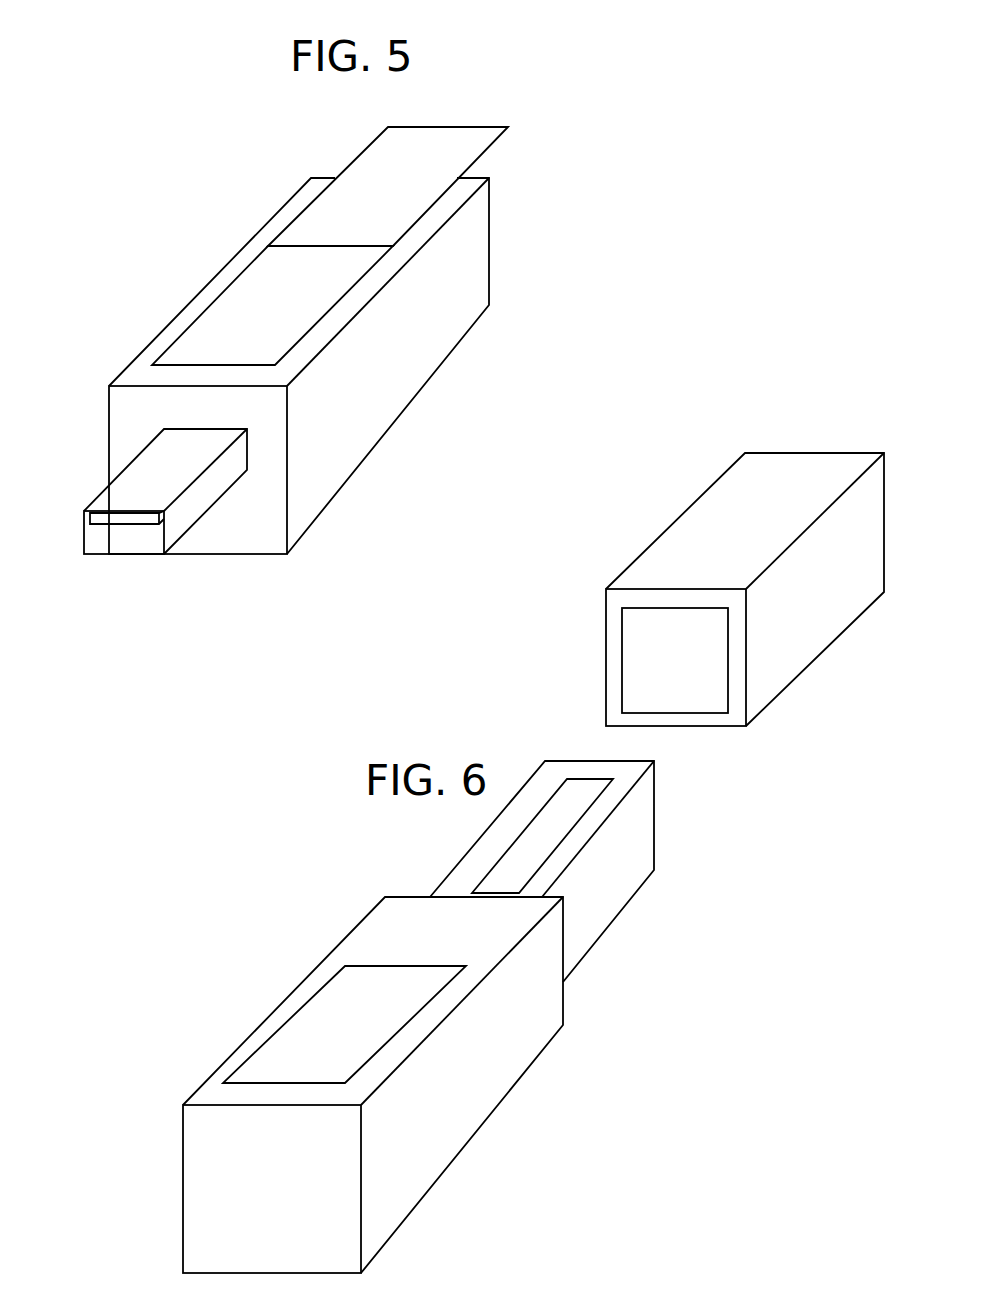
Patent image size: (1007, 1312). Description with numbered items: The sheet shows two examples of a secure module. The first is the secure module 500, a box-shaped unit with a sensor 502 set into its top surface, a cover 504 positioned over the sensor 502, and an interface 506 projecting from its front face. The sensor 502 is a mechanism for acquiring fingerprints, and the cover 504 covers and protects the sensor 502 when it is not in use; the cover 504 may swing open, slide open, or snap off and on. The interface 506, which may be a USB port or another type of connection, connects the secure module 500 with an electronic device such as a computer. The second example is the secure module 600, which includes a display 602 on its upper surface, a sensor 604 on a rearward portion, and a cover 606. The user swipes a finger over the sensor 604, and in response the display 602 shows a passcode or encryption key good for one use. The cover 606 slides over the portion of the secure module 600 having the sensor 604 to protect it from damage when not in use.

In FIG. 5, the secure module 500 is at (525, 203).
In FIG. 5, the sensor 502 is at (314, 295).
In FIG. 5, the cover 504 is at (435, 127).
In FIG. 5, the interface 506 is at (84, 536).
In FIG. 6, the secure module 600 is at (617, 903).
In FIG. 6, the display 602 is at (386, 1014).
In FIG. 6, the sensor 604 is at (585, 779).
In FIG. 6, the cover 606 is at (752, 532).